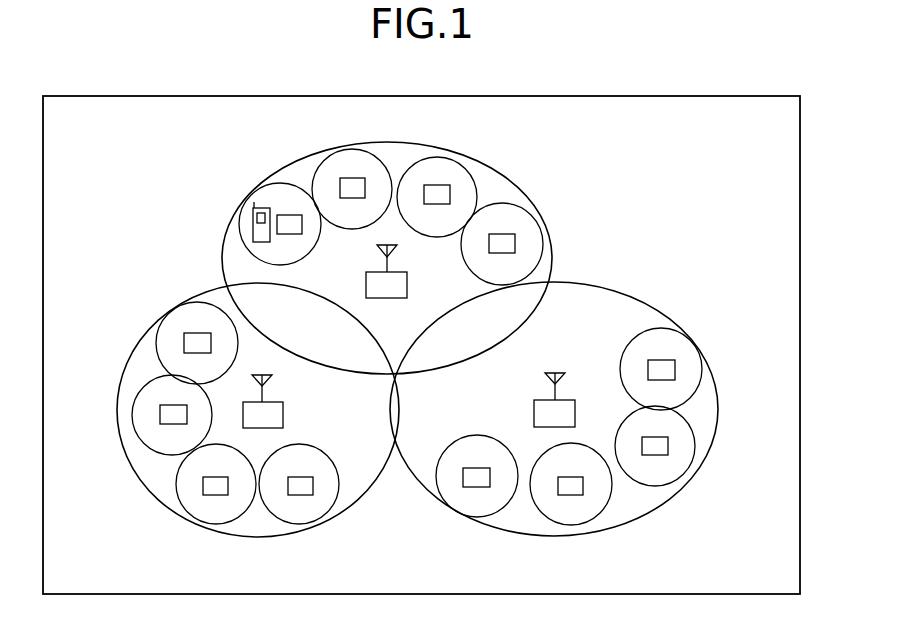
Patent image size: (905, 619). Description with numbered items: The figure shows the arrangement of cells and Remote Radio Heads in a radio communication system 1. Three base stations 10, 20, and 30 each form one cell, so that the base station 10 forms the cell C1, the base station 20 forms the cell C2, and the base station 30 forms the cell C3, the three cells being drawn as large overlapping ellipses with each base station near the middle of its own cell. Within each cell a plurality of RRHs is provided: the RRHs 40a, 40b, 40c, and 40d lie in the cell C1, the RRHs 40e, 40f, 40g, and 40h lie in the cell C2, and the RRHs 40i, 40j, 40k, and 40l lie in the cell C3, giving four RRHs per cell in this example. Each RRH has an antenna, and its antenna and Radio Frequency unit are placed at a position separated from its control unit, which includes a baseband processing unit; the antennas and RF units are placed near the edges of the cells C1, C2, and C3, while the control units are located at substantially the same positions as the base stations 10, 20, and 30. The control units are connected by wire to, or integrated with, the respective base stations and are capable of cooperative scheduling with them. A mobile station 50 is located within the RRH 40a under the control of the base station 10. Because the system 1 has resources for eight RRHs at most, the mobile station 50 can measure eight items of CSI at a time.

The radio communication system 1 is at (216, 96).
The base station 10 is at (408, 283).
The base station 20 is at (284, 416).
The base station 30 is at (532, 415).
The Remote Radio Head (RRH) 40a is at (289, 214).
The Remote Radio Head (RRH) 40b is at (366, 189).
The Remote Radio Head (RRH) 40c is at (451, 194).
The Remote Radio Head (RRH) 40d is at (516, 244).
The Remote Radio Head (RRH) 40e is at (183, 342).
The Remote Radio Head (RRH) 40f is at (160, 415).
The Remote Radio Head (RRH) 40g is at (215, 496).
The Remote Radio Head (RRH) 40h is at (299, 496).
The Remote Radio Head (RRH) 40i is at (676, 370).
The Remote Radio Head (RRH) 40j is at (669, 446).
The Remote Radio Head (RRH) 40k is at (569, 496).
The Remote Radio Head (RRH) 40l is at (476, 488).
The mobile station 50 is at (252, 225).
The cell C1 is at (556, 262).
The cell C2 is at (362, 508).
The cell C3 is at (719, 418).